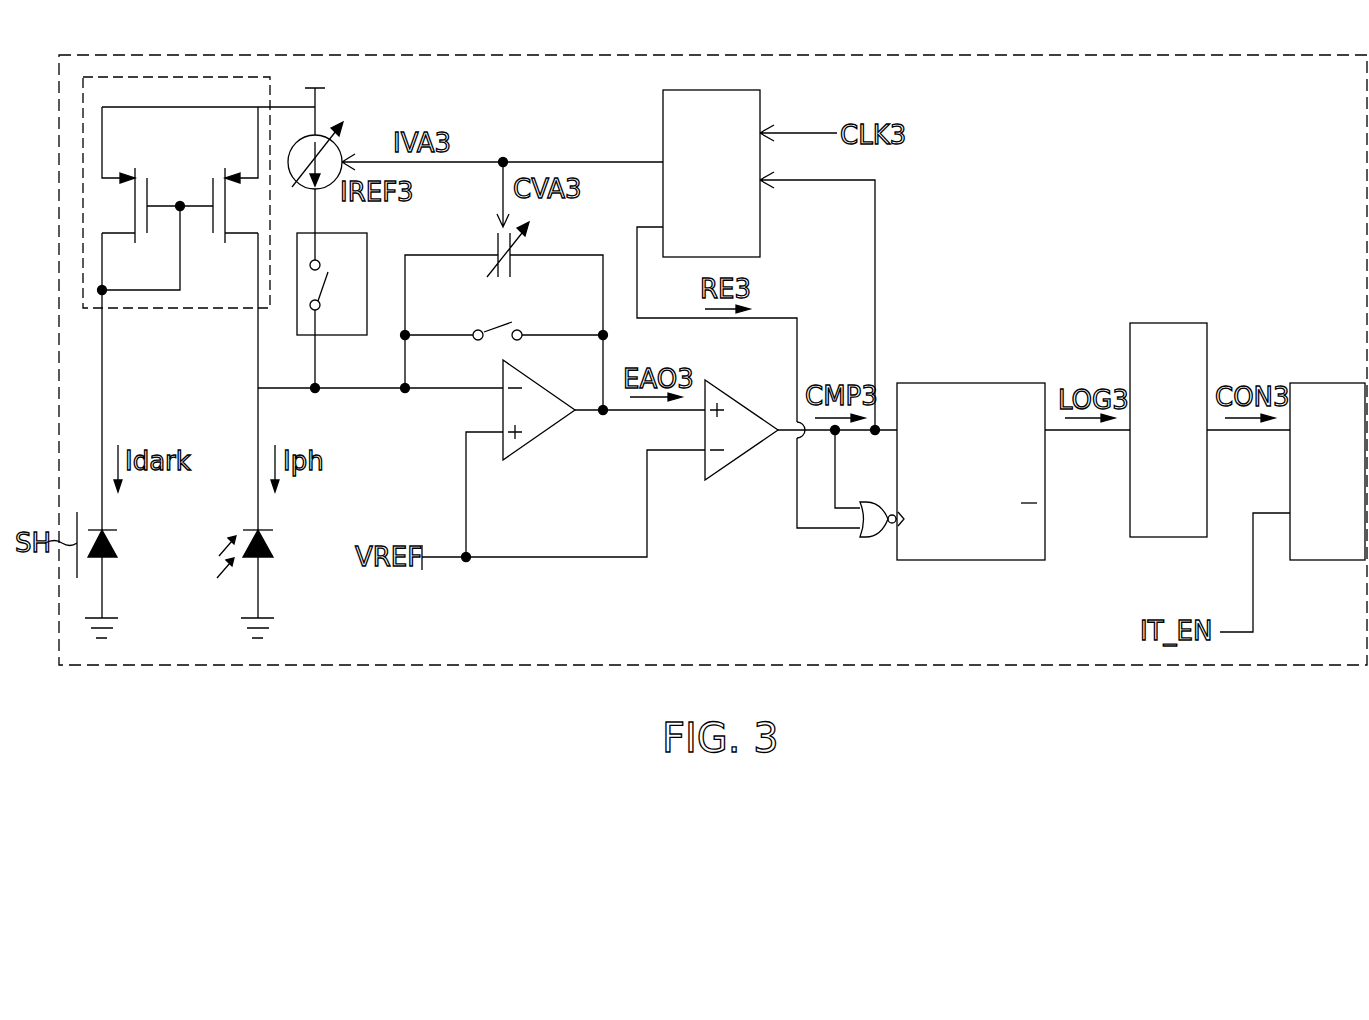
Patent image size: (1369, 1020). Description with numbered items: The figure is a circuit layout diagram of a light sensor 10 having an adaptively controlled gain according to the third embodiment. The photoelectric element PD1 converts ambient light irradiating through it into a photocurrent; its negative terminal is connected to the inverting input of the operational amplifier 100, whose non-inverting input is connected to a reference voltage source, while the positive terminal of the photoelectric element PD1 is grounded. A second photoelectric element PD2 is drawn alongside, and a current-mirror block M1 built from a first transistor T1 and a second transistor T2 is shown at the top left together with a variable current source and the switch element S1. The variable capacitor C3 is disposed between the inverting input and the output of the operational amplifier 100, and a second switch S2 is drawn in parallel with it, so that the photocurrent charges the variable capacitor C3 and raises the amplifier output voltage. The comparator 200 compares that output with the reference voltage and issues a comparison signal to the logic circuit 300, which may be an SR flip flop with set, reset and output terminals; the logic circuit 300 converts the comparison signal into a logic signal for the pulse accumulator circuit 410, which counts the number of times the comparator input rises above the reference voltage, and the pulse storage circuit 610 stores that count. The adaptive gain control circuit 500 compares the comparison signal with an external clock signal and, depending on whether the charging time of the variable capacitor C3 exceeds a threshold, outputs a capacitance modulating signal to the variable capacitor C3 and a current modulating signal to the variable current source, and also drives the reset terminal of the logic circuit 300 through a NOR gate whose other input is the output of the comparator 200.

The light sensor 10 is at (717, 55).
The current mirror M1 is at (199, 232).
The first transistor T1 is at (136, 205).
The second transistor T2 is at (222, 205).
The photoelectric element PD1 is at (273, 553).
The second photodiode PD2 is at (131, 544).
The switch element S1 is at (332, 310).
The second switch S2 is at (504, 318).
The variable capacitor C3 is at (519, 254).
The operational amplifier 100 is at (552, 427).
The comparator 200 is at (753, 450).
The logic circuit 300 is at (970, 383).
The pulse accumulator circuit 410 is at (1167, 323).
The adaptive gain control circuit 500 is at (663, 121).
The pulse storage circuit 610 is at (1322, 383).